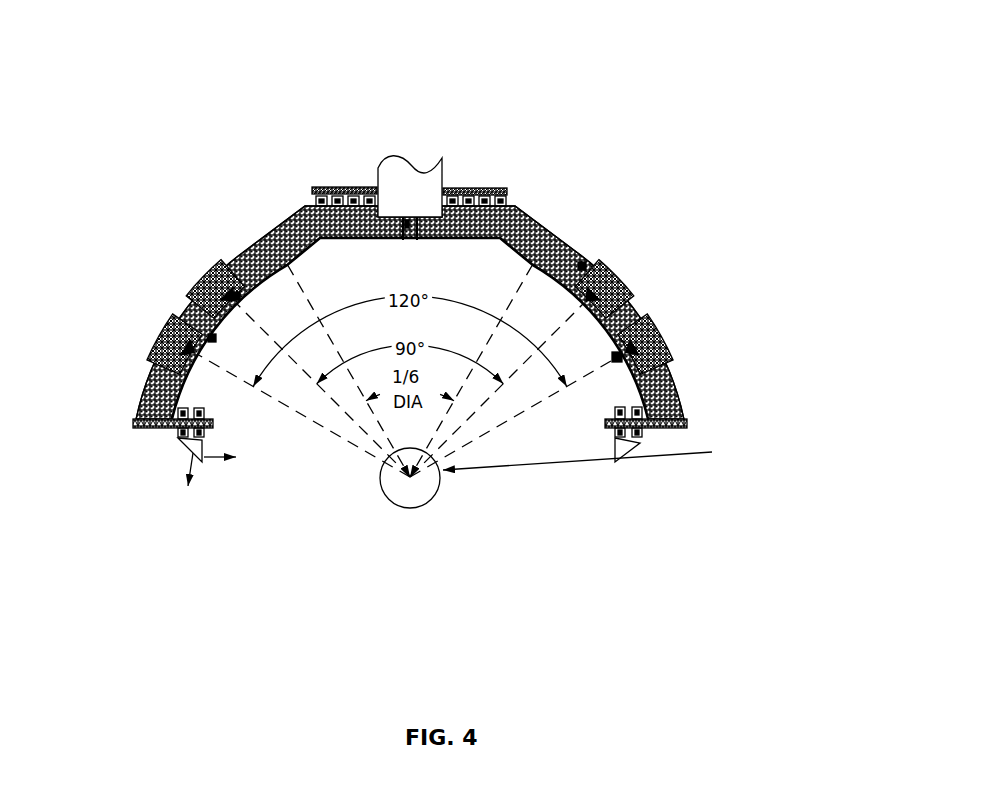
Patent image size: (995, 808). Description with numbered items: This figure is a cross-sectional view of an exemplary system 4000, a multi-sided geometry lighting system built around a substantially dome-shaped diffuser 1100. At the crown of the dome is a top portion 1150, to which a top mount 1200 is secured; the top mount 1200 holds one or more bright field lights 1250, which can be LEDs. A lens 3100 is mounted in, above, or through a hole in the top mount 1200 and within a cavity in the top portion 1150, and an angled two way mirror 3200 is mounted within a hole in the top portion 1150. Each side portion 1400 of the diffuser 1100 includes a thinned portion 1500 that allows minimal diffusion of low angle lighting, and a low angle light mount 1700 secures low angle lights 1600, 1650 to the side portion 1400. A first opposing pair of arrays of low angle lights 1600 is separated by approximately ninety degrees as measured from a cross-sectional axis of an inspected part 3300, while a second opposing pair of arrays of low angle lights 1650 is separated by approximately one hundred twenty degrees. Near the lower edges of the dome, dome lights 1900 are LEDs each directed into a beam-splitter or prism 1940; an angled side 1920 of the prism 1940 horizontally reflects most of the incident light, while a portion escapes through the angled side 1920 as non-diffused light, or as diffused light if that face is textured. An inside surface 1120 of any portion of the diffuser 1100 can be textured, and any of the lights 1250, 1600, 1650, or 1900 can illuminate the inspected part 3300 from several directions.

The system 4000 is at (152, 105).
The diffuser 1100 is at (478, 392).
The inside surface 1120 is at (410, 465).
The top portion 1150 is at (437, 255).
The top mount 1200 is at (595, 124).
The bright field lights 1250 is at (310, 198).
The side portion 1400 is at (423, 282).
The thinned portion 1500 is at (633, 432).
The low angle lights 1600 is at (243, 296).
The low angle lights 1650 is at (163, 387).
The low angle light mount 1700 is at (650, 335).
The dome lights 1900 is at (208, 515).
The angled side 1920 is at (131, 476).
The prism 1940 is at (638, 435).
The lens 3100 is at (470, 117).
The angled two way mirror 3200 is at (379, 417).
The inspected part 3300 is at (442, 515).